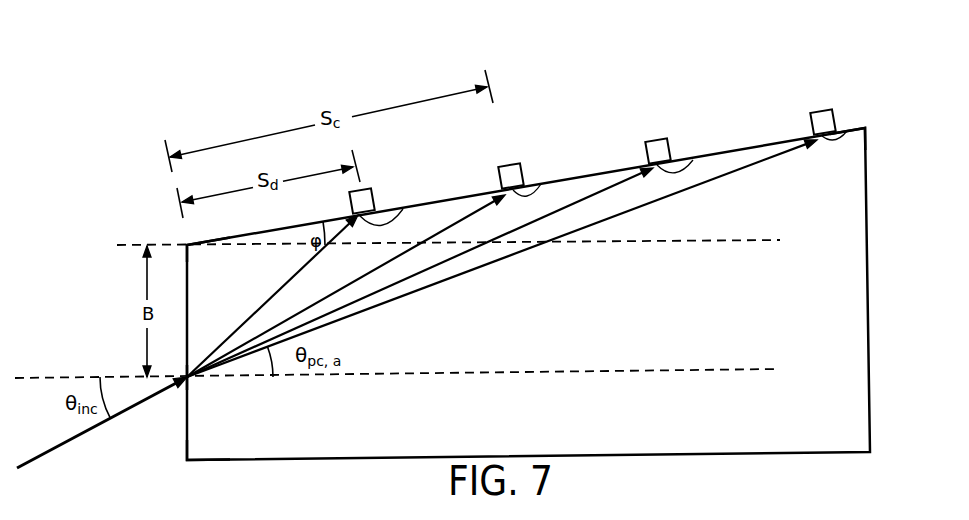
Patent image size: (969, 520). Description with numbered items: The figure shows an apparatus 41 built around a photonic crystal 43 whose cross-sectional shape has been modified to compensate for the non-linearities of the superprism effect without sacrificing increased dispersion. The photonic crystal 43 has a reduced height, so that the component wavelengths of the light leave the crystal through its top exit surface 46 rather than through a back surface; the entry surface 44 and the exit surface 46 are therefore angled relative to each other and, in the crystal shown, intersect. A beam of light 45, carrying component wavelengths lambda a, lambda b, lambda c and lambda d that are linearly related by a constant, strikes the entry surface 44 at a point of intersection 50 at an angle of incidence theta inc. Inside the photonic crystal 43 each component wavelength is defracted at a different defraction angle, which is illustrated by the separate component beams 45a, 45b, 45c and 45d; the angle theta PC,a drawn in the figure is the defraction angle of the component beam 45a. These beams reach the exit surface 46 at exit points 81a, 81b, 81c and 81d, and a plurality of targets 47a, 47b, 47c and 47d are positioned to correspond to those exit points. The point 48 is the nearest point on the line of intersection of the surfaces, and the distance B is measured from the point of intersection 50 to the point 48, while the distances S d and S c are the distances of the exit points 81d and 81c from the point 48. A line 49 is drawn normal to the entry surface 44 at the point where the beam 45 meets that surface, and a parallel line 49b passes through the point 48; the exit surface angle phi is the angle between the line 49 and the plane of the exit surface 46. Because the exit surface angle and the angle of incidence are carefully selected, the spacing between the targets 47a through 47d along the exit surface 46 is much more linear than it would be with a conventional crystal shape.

The apparatus 41 is at (108, 150).
The photonic crystal 43 is at (540, 408).
The entry surface 44 is at (182, 460).
The beam of light 45 is at (60, 443).
The component beam 45a is at (503, 258).
The component beam 45b is at (458, 252).
The component beam 45c is at (308, 303).
The component beam 45d is at (250, 313).
The exit surface 46 is at (852, 128).
The target 47a is at (817, 108).
The target 47b is at (653, 137).
The target 47c is at (510, 162).
The target 47d is at (362, 187).
The point on line of intersection 48 is at (187, 243).
The line normal to surface 49 is at (32, 377).
The parallel line 49b is at (117, 248).
The point of intersection 50 is at (183, 380).
The exit point 81a is at (815, 140).
The exit point 81b is at (693, 162).
The exit point 81c is at (538, 187).
The exit point 81d is at (399, 208).